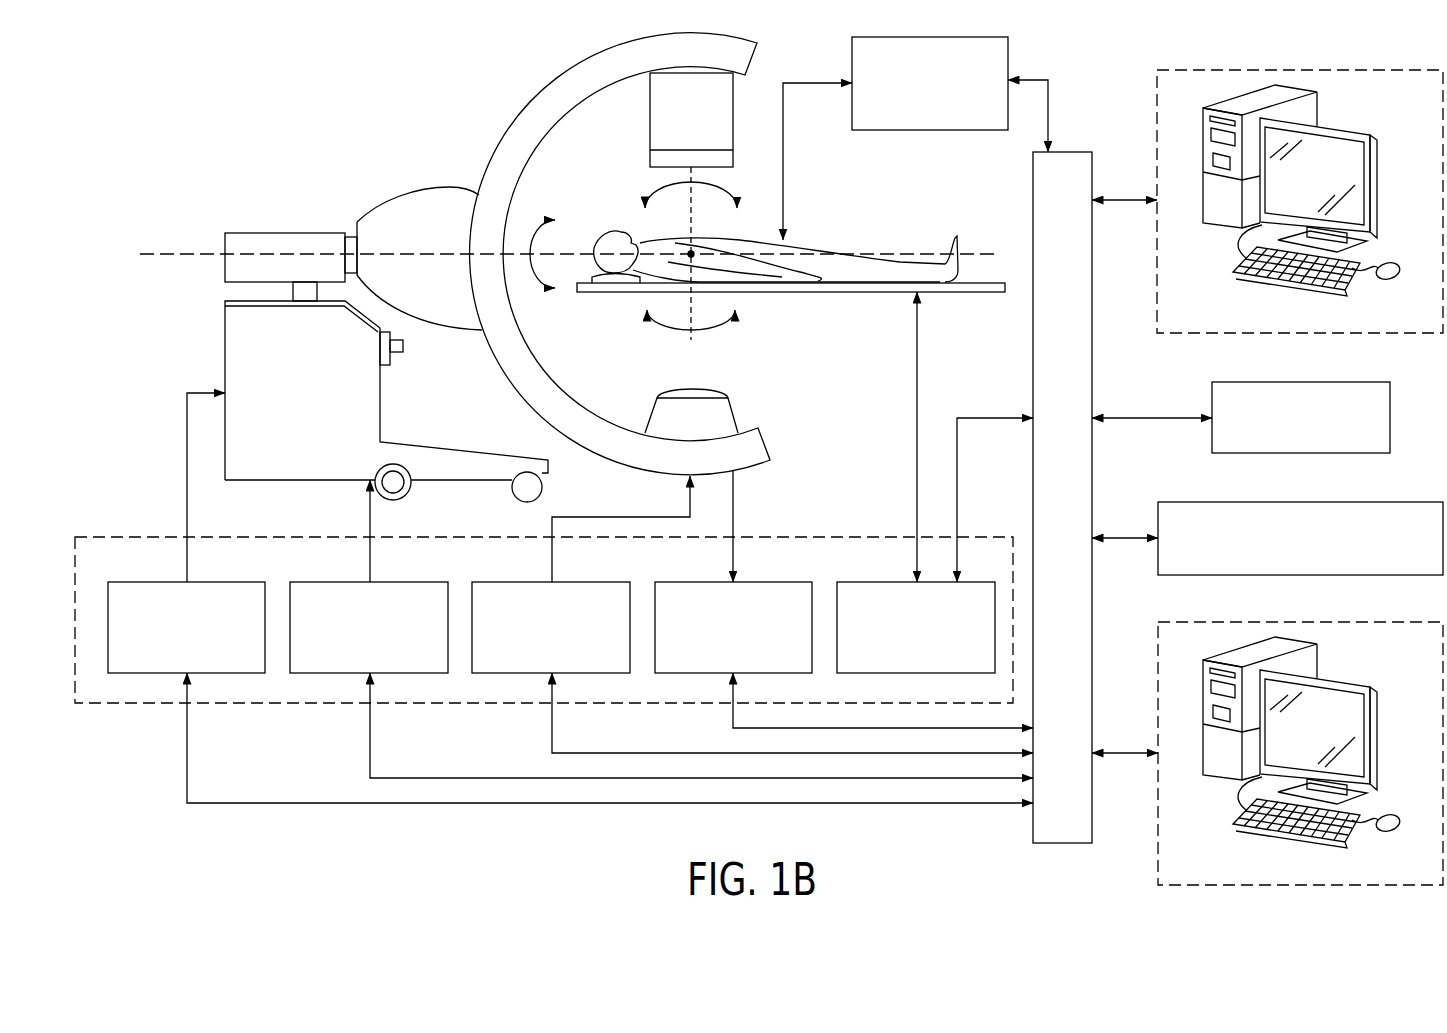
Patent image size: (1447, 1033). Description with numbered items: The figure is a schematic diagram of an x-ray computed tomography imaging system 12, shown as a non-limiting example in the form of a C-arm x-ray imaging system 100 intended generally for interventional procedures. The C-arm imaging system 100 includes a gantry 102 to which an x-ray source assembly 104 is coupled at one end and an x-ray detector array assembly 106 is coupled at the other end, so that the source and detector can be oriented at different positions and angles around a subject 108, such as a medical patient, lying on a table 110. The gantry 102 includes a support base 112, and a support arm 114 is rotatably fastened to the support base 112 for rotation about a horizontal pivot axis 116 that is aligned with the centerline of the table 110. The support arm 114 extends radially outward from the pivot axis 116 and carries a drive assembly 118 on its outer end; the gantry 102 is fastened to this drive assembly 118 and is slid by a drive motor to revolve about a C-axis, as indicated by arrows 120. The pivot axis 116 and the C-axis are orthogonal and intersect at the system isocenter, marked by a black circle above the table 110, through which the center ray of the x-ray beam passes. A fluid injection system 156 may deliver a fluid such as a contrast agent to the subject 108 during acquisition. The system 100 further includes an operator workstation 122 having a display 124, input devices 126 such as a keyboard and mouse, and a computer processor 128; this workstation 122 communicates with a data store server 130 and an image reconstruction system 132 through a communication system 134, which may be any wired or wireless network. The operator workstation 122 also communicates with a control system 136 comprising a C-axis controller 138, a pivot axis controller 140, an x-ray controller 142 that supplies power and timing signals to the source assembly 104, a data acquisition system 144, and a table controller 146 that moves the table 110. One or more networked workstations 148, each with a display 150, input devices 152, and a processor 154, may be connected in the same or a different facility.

The imaging system 12 is at (127, 90).
The C-arm x-ray imaging system 100 is at (253, 112).
The gantry 102 is at (514, 117).
The x-ray source assembly 104 is at (733, 122).
The x-ray detector array assembly 106 is at (737, 407).
The subject 108 is at (615, 212).
The table 110 is at (945, 293).
The support base 112 is at (223, 350).
The support arm 114 is at (318, 231).
The pivot axis 116 is at (203, 255).
The drive assembly 118 is at (397, 194).
The arrows 120 is at (725, 186).
The operator workstation 122 is at (1378, 70).
The display 124 is at (1340, 130).
The input devices 126 is at (1233, 258).
The computer processor 128 is at (1238, 101).
The data store server 130 is at (1325, 382).
The image reconstruction system 132 is at (1377, 502).
The communication system 134 is at (1060, 152).
The control system 136 is at (808, 537).
The C-axis controller 138 is at (203, 582).
The pivot axis controller 140 is at (386, 582).
The x-ray controller 142 is at (568, 582).
The data acquisition system 144 is at (750, 582).
The table controller 146 is at (895, 582).
The networked workstation 148 is at (1378, 622).
The display 150 is at (1342, 682).
The input devices 152 is at (1233, 810).
The processor 154 is at (1238, 653).
The fluid injection system 156 is at (928, 131).